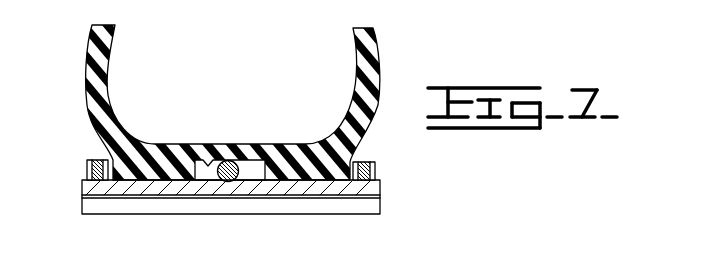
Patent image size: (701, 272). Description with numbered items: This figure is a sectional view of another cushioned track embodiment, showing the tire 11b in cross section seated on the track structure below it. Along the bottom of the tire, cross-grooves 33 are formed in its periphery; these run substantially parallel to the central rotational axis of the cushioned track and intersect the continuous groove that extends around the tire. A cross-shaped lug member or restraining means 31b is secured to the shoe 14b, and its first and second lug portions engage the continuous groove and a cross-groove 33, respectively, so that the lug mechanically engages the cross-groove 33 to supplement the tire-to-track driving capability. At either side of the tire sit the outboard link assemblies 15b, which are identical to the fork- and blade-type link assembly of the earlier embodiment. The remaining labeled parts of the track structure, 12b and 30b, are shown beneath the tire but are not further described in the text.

The tire 11b is at (357, 73).
The rim base 12b is at (420, 199).
The shoe 14b is at (363, 183).
The outboard link assemblies 15b is at (78, 168).
The base plate 30b is at (285, 207).
The cross-shaped lug member or restraining means 31b is at (222, 188).
The cross-grooves 33 is at (215, 160).